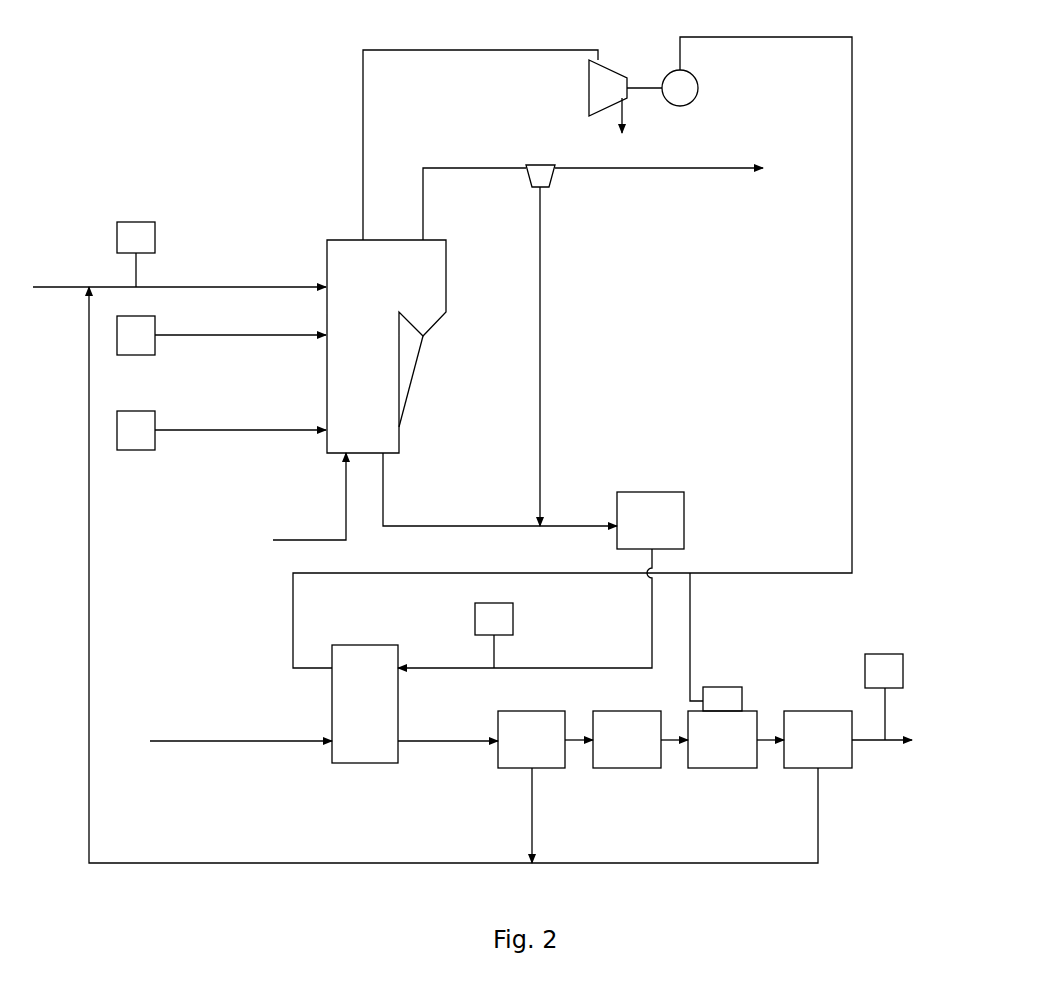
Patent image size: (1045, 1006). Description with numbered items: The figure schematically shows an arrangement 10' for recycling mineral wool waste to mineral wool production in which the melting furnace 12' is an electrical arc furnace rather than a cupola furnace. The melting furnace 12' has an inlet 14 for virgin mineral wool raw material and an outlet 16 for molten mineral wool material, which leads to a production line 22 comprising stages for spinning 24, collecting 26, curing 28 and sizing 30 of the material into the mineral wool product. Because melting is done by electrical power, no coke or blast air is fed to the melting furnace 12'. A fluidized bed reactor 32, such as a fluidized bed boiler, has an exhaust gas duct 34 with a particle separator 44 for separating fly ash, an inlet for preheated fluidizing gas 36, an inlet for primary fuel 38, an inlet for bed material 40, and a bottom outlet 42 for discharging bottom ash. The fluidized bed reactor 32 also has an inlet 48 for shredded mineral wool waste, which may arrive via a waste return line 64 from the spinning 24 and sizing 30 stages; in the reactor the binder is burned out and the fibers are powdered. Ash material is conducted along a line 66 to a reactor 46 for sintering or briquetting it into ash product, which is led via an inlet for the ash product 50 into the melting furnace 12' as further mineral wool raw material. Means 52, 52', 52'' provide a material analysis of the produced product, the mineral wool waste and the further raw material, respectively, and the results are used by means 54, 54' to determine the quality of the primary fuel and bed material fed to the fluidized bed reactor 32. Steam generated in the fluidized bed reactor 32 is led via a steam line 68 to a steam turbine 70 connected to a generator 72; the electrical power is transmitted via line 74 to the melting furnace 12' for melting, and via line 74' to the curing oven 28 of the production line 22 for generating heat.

The arrangement 10' is at (214, 152).
The melting furnace 12' is at (365, 704).
The inlet for virgin mineral wool raw material 14 is at (240, 745).
The outlet for molten mineral wool material 16 is at (462, 744).
The production line 22 is at (674, 796).
The spinning stage 24 is at (531, 739).
The collecting stage 26 is at (613, 739).
The curing oven 28 is at (709, 739).
The sizing stage 30 is at (834, 739).
The fluidized bed reactor 32 is at (386, 346).
The exhaust gas duct 34 is at (473, 168).
The inlet for preheated fluidizing gas 36 is at (342, 486).
The inlet for primary fuel 38 is at (320, 429).
The inlet for bed material 40 is at (320, 334).
The bottom outlet 42 is at (384, 490).
The particle separator 44 is at (555, 180).
The reactor 46 is at (650, 520).
The inlet for shredded mineral wool waste 48 is at (320, 286).
The inlet for the ash product 50 is at (474, 667).
The means for providing a material analysis 52 is at (906, 690).
The means for providing a material analysis 52' is at (162, 254).
The means for providing a material analysis 52'' is at (523, 630).
The means for determining quality of primary fuel 54 is at (154, 350).
The means for determining quality of bed material 54' is at (157, 445).
The waste return line 64 is at (89, 577).
The line 66 is at (578, 524).
The steam line 68 is at (363, 116).
The steam turbine 70 is at (588, 90).
The generator 72 is at (698, 90).
The line 74 is at (572, 352).
The line 74' is at (730, 642).